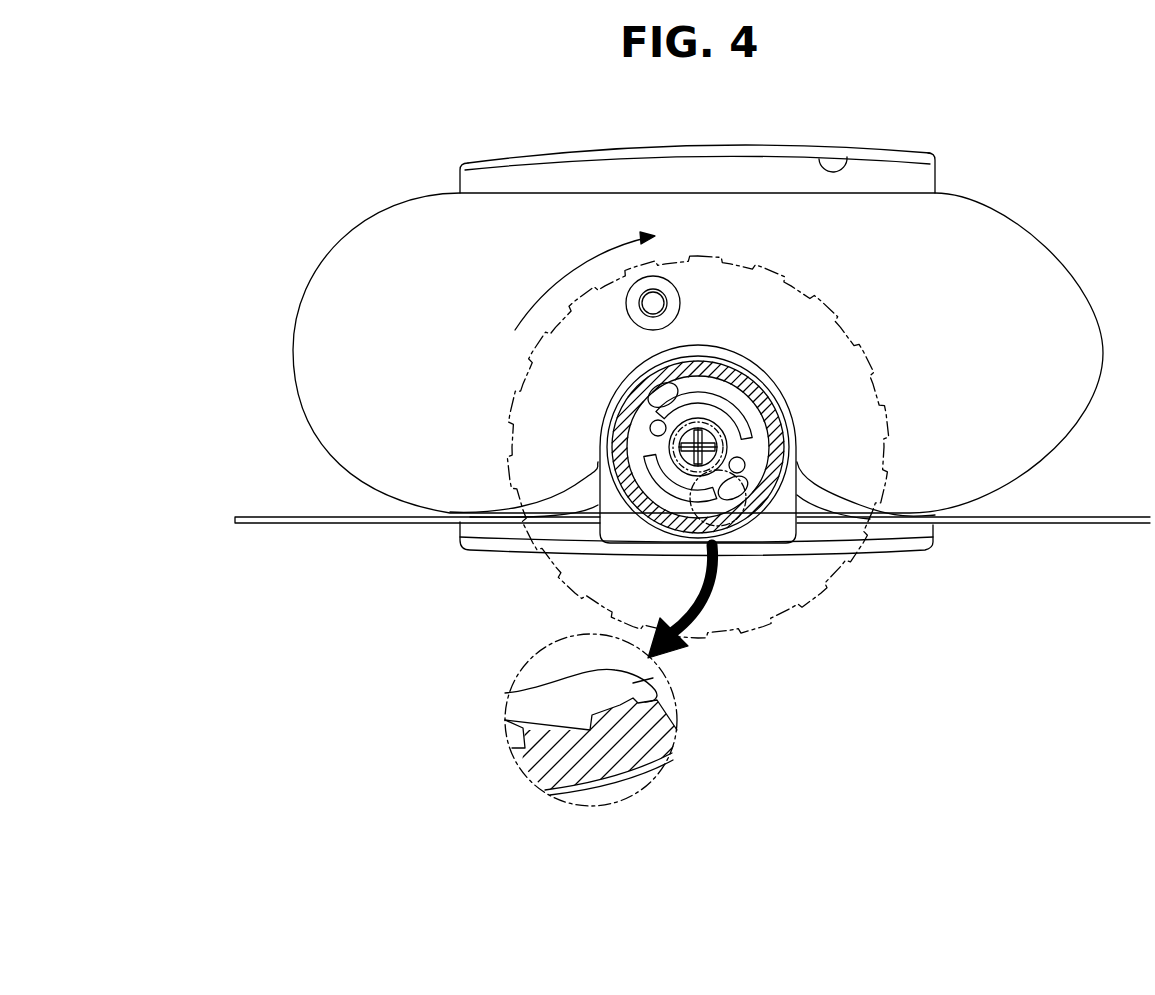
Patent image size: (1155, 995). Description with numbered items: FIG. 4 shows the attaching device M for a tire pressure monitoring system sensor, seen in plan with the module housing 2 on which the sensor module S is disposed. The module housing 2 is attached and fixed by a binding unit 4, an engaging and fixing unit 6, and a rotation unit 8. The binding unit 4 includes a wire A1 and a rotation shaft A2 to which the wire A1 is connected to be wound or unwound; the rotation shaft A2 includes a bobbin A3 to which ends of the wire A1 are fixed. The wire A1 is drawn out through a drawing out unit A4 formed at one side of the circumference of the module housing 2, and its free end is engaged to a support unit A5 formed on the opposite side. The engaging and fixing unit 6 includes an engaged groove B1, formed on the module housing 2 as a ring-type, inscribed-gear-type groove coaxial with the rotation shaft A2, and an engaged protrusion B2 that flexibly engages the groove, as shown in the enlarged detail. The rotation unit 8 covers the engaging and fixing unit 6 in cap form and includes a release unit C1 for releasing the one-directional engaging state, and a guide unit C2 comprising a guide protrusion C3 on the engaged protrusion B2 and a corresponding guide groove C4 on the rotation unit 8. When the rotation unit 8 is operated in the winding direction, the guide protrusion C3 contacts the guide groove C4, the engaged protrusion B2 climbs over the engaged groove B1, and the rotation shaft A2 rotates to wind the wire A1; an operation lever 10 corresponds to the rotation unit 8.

The attaching device M is at (713, 304).
The module housing 2 is at (713, 356).
The sensor module S is at (1040, 273).
The operation lever 10 is at (745, 262).
The support unit A5 is at (833, 160).
The wire A1 is at (1027, 519).
The drawing out unit A4 is at (902, 530).
The rotation shaft A2 is at (793, 510).
The bobbin A3 is at (713, 462).
The binding unit 4 is at (816, 532).
The rotation unit 8 is at (482, 393).
The release unit C1 is at (640, 410).
The guide unit C2 is at (482, 376).
The guide protrusion C3 is at (655, 423).
The guide groove C4 is at (660, 368).
The engaging and fixing unit 6 is at (624, 737).
The engaged groove B1 is at (672, 740).
The engaged protrusion B2 is at (674, 708).